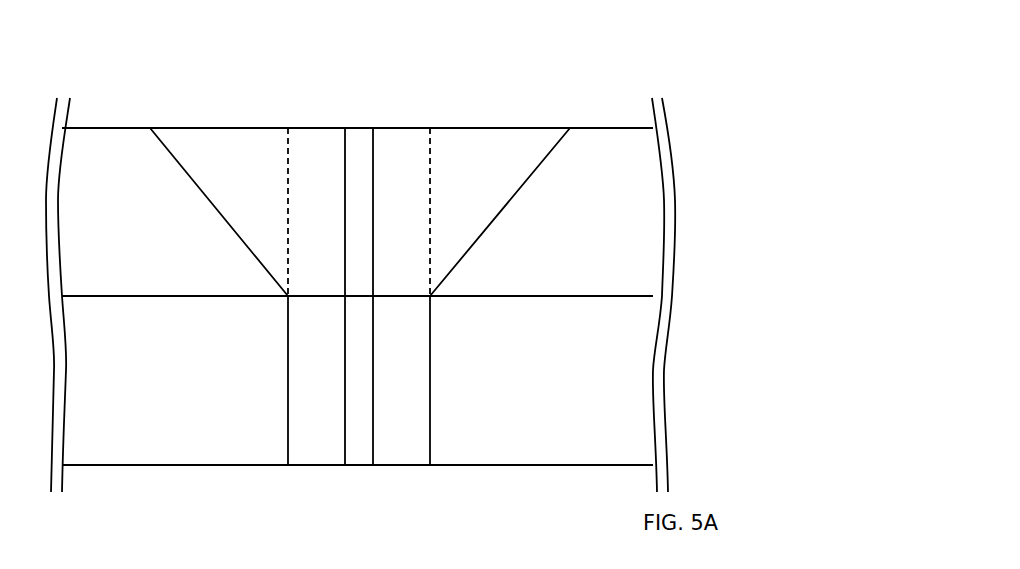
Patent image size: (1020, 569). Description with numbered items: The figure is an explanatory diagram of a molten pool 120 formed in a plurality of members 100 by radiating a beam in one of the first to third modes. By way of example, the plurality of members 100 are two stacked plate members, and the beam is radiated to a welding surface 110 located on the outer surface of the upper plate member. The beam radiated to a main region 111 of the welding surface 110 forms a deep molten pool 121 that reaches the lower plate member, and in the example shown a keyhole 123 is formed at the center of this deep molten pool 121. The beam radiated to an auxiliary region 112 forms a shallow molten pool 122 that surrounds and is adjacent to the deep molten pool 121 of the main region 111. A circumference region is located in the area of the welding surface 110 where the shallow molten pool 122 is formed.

The plurality of members 100 is at (698, 198).
The welding surface 110 is at (602, 127).
The main region 111 is at (333, 127).
The auxiliary region 112 is at (233, 127).
The molten pool 120 is at (422, 55).
The deep molten pool 121 is at (396, 433).
The shallow molten pool 122 is at (252, 177).
The keyhole 123 is at (362, 432).